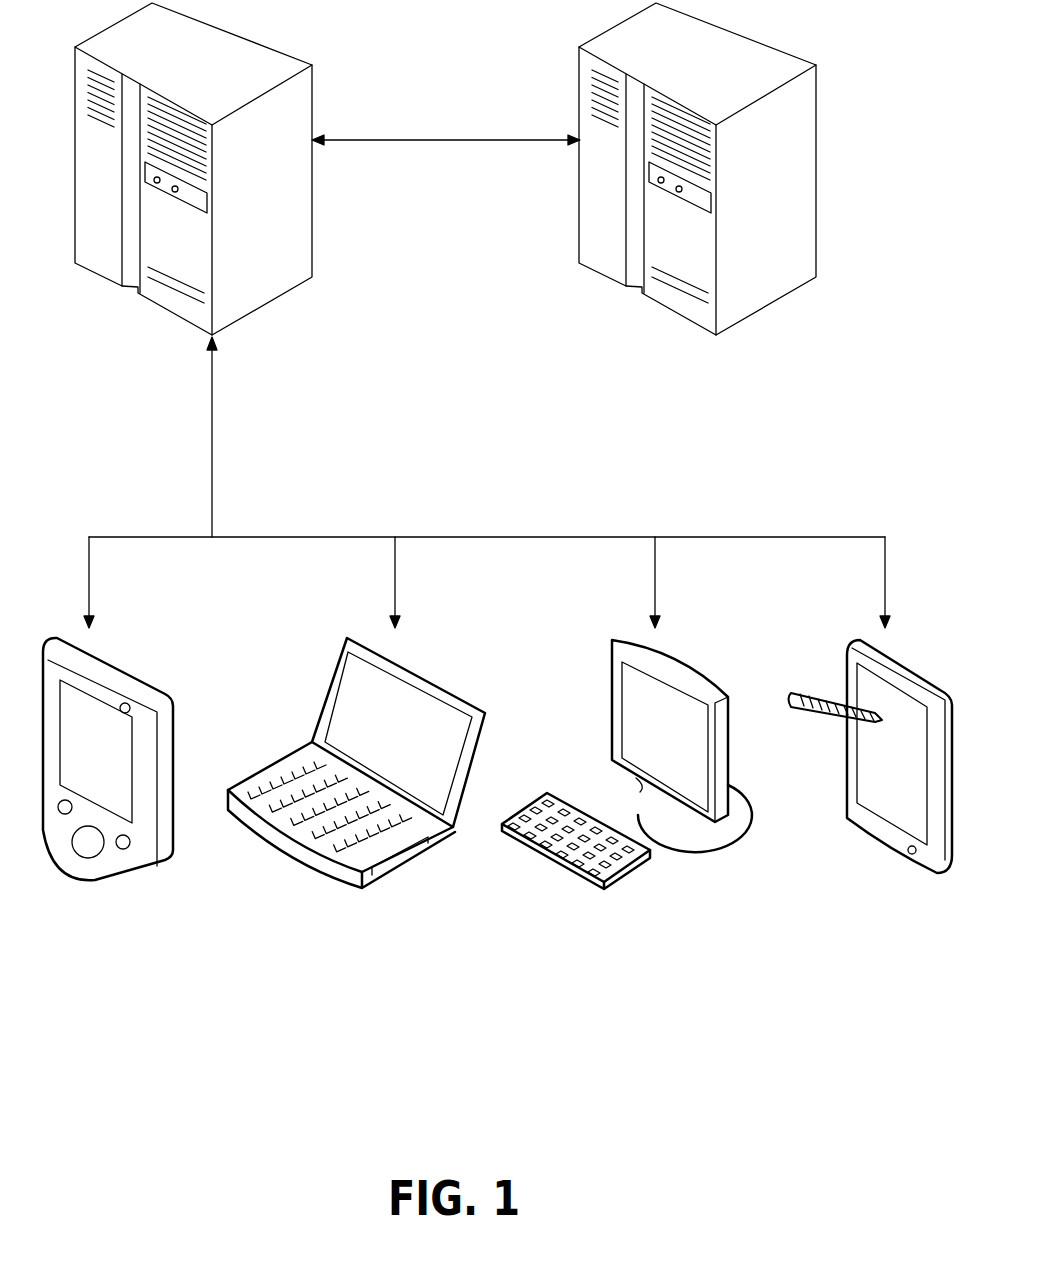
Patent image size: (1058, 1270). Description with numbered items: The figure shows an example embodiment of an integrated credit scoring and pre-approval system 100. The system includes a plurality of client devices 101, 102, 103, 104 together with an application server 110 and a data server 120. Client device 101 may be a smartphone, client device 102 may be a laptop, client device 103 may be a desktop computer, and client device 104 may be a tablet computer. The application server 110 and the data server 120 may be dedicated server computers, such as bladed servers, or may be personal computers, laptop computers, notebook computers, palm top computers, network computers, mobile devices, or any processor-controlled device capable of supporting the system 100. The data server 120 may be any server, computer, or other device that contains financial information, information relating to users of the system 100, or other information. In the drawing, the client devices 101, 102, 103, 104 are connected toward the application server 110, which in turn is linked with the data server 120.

The integrated credit scoring and pre-approval system 100 is at (378, 1135).
The application server 110 is at (268, 184).
The data server 120 is at (741, 182).
The client device 101 is at (119, 800).
The client device 102 is at (356, 800).
The client device 103 is at (627, 800).
The client device 104 is at (876, 799).